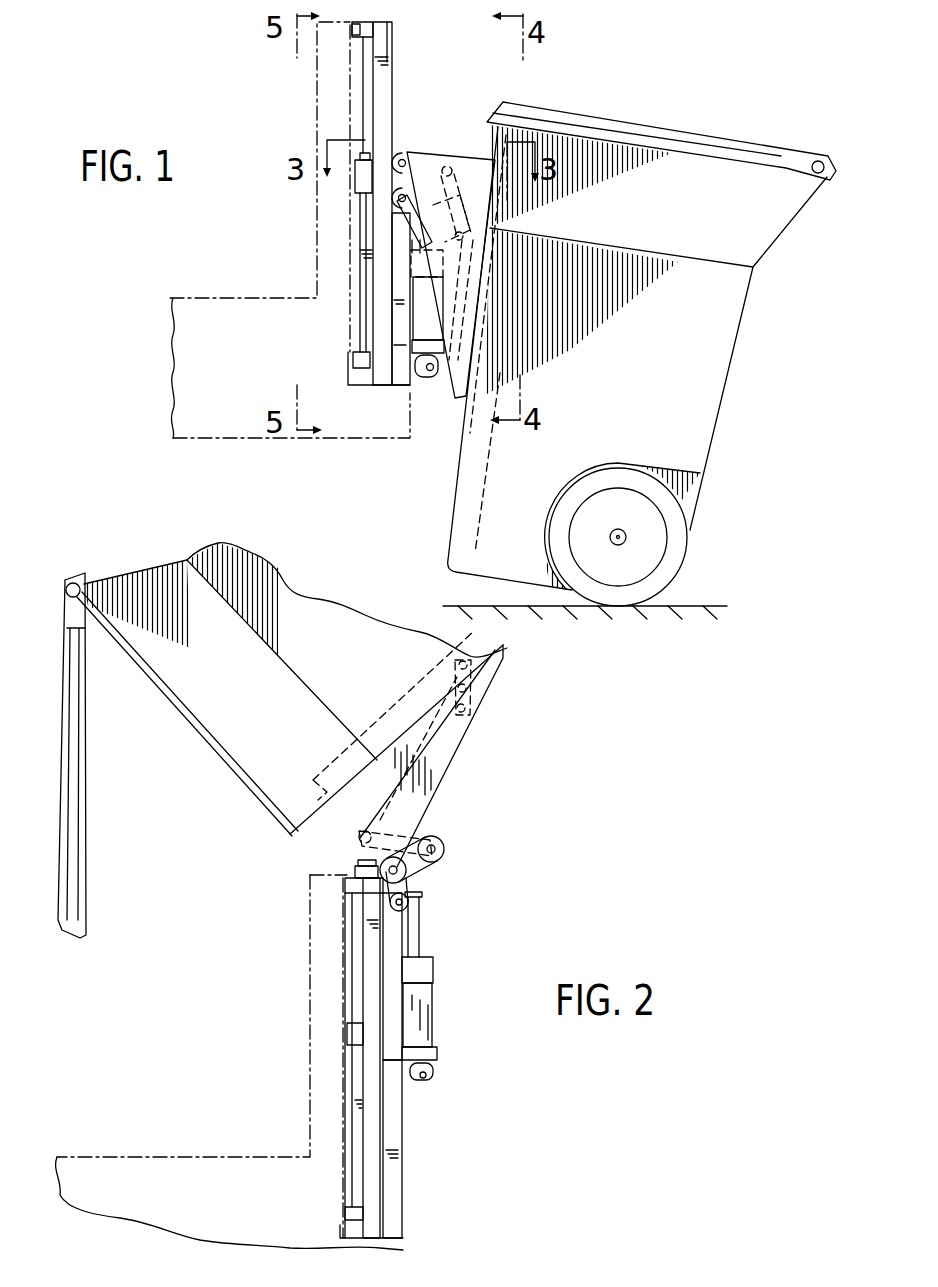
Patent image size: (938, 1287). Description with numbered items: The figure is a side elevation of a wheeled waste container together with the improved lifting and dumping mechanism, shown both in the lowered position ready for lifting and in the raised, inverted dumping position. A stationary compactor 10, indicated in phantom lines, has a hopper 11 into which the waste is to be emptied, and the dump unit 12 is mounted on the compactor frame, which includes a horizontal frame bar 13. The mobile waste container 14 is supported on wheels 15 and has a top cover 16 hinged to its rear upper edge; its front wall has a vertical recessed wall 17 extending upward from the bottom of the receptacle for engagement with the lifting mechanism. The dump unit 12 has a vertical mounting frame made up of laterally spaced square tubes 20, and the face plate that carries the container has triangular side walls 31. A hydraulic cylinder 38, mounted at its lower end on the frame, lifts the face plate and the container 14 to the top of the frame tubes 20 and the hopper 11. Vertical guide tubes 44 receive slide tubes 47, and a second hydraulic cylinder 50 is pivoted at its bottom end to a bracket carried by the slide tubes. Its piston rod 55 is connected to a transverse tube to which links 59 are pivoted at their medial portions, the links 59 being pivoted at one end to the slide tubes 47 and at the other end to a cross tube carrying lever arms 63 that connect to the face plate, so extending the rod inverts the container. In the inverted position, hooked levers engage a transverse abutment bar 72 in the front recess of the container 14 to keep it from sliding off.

In FIG. 1, the stationary compactor 10 is at (213, 442).
In FIG. 1, the hopper 11 is at (240, 300).
In FIG. 2, the hopper 11 is at (196, 1156).
In FIG. 1, the dump unit 12 is at (402, 132).
In FIG. 2, the dump unit 12 is at (468, 880).
In FIG. 1, the horizontal frame bar 13 is at (352, 28).
In FIG. 1, the mobile waste container 14 is at (705, 376).
In FIG. 2, the mobile waste container 14 is at (298, 582).
In FIG. 1, the wheels 15 is at (677, 557).
In FIG. 1, the top cover 16 is at (652, 123).
In FIG. 2, the top cover 16 is at (75, 797).
In FIG. 1, the vertical recessed wall 17 is at (483, 470).
In FIG. 1, the square tubes 20 is at (379, 96).
In FIG. 2, the square tubes 20 is at (373, 960).
In FIG. 1, the triangular side walls 31 is at (467, 170).
In FIG. 2, the triangular side walls 31 is at (437, 763).
In FIG. 1, the hydraulic cylinder 38 is at (366, 240).
In FIG. 2, the hydraulic cylinder 38 is at (358, 1098).
In FIG. 1, the vertical guide tubes 44 is at (397, 323).
In FIG. 2, the vertical guide tubes 44 is at (395, 1145).
In FIG. 2, the slide tubes 47 is at (395, 998).
In FIG. 1, the hydraulic cylinder 50 is at (420, 290).
In FIG. 2, the hydraulic cylinder 50 is at (427, 1023).
In FIG. 2, the piston rod 55 is at (420, 930).
In FIG. 2, the links 59 is at (425, 866).
In FIG. 2, the lever arms 63 is at (423, 834).
In FIG. 1, the transverse abutment bar 72 is at (463, 417).
In FIG. 2, the transverse abutment bar 72 is at (480, 667).